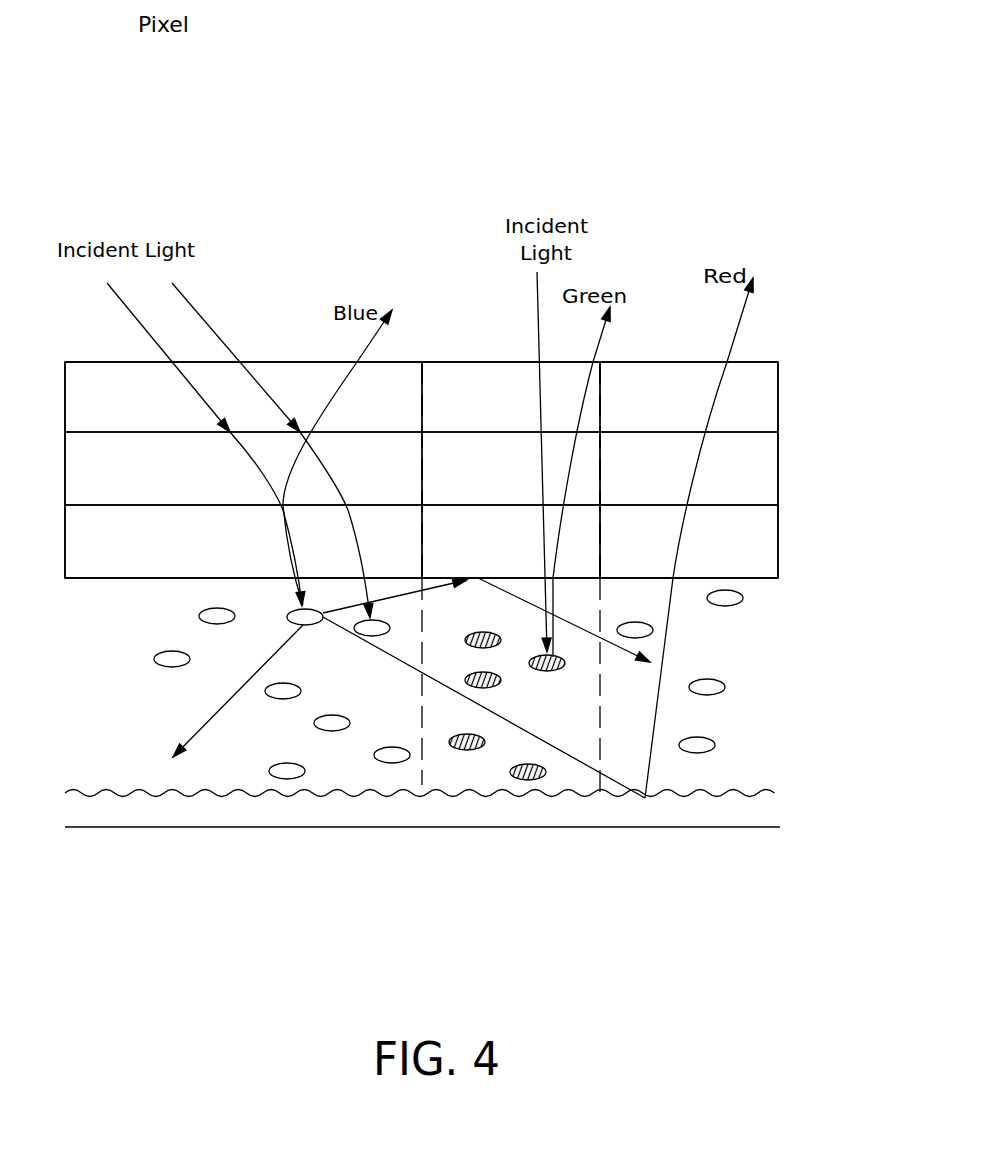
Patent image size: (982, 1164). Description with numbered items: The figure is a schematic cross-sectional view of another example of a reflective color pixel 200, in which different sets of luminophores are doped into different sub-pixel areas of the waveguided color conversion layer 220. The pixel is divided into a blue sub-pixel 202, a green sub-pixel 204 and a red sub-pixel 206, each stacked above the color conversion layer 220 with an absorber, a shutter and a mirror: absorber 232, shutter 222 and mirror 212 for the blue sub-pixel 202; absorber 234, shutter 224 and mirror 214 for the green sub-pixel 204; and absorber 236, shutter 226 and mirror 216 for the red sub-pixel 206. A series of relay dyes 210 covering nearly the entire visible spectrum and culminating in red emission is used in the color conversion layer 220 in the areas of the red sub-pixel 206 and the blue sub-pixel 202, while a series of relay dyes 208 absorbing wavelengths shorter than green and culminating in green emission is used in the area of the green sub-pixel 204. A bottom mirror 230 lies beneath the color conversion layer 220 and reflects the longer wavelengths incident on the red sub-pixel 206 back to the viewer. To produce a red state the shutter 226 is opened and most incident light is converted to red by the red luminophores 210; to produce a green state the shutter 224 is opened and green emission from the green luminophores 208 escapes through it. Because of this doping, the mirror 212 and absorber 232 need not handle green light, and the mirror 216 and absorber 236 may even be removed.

The reflective color pixel 200 is at (287, 167).
The blue sub-pixel 202 is at (277, 362).
The green sub-pixel 204 is at (430, 362).
The red sub-pixel 206 is at (760, 362).
The relay dyes 208 is at (527, 780).
The relay dyes 210 is at (287, 780).
The mirror 212 is at (243, 541).
The mirror 214 is at (511, 541).
The mirror 216 is at (689, 541).
The color conversion layer 220 is at (115, 693).
The shutter 222 is at (243, 468).
The shutter 224 is at (511, 468).
The shutter 226 is at (689, 468).
The bottom mirror 230 is at (90, 790).
The absorber 232 is at (243, 397).
The absorber 234 is at (511, 397).
The absorber 236 is at (689, 397).